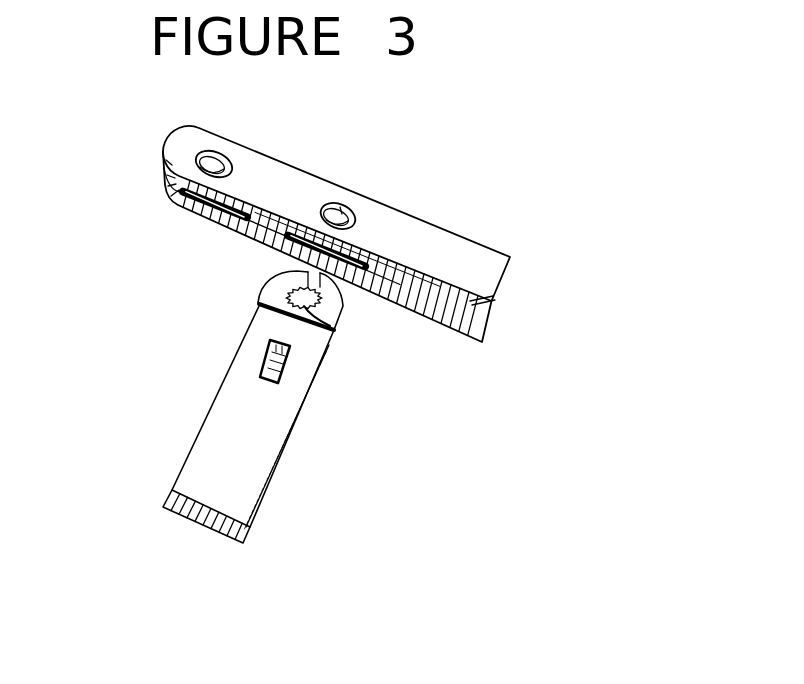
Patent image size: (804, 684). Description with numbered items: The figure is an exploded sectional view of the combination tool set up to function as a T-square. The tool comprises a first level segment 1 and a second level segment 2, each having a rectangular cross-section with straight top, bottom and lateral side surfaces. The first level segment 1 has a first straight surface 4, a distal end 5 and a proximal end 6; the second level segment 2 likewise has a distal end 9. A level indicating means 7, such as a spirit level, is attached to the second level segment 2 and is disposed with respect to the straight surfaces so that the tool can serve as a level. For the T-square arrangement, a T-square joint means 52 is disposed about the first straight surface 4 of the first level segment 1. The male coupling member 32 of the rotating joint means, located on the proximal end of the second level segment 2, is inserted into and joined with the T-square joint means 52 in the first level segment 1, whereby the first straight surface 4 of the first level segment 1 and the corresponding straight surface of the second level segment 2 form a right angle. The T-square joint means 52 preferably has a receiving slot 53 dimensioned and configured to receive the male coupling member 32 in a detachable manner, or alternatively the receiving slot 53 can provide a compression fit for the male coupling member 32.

The first level segment 1 is at (327, 247).
The second level segment 2 is at (253, 417).
The first straight surface 4 is at (306, 166).
The distal end 5 is at (507, 289).
The proximal end 6 is at (161, 152).
The level indicating means 7 is at (268, 361).
The distal end 9 is at (218, 533).
The male coupling member 32 is at (330, 305).
The T-square joint means 52 is at (337, 208).
The receiving slot 53 is at (284, 248).